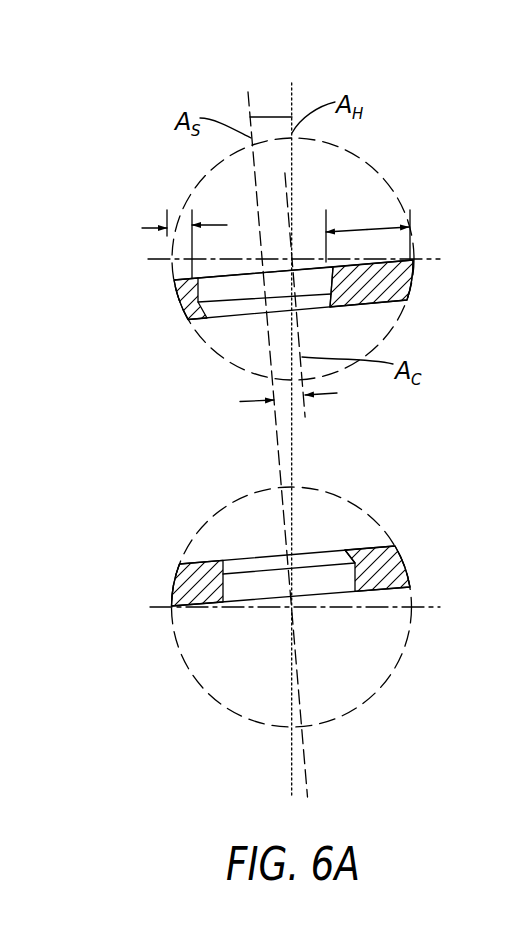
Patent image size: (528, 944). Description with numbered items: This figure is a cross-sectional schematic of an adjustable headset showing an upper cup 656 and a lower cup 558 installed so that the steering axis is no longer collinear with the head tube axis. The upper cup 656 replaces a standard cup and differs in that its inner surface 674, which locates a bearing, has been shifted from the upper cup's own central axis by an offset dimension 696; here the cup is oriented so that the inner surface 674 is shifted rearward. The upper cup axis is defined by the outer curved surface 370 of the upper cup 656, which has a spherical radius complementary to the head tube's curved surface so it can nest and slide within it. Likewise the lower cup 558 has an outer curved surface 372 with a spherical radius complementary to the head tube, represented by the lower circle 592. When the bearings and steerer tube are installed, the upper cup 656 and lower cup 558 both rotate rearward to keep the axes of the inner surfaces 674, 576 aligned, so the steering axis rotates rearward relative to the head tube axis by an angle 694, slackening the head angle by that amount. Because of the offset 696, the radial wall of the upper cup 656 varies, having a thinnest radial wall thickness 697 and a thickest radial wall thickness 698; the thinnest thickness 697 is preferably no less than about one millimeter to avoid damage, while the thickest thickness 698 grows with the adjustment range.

The angle 694 is at (270, 113).
The inner surface 674 is at (307, 290).
The radial wall thickness 697 is at (142, 230).
The radial wall thickness 698 is at (411, 249).
The outer curved surface 370 is at (176, 300).
The upper cup 656 is at (409, 289).
The offset dimension 696 is at (249, 402).
The lower circle 592 is at (219, 513).
The lower cup 558 is at (405, 564).
The outer curved surface 372 is at (171, 584).
The inner surface 576 is at (320, 584).